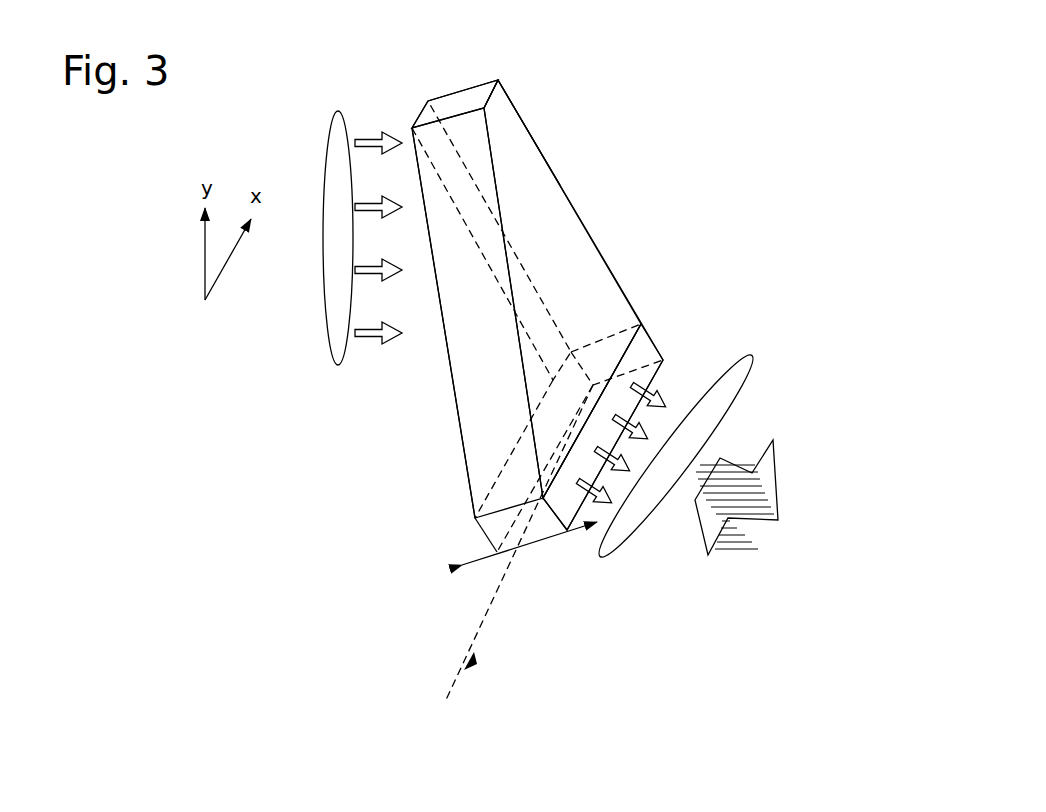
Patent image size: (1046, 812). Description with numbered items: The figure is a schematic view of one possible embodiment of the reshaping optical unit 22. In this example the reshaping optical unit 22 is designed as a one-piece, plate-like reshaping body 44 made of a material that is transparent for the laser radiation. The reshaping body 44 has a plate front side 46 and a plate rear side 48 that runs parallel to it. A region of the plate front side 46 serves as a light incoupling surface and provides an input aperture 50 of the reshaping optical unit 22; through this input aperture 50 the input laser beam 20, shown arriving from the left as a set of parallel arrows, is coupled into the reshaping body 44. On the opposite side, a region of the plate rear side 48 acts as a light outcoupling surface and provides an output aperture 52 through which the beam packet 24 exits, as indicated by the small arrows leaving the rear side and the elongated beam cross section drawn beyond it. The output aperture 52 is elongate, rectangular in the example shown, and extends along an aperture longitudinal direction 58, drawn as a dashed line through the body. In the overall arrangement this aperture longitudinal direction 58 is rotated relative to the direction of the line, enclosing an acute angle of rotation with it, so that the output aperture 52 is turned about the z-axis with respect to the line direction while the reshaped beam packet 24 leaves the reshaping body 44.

The input laser beam 20 is at (325, 113).
The reshaping optical unit 22 is at (552, 59).
The beam packet 24 is at (595, 570).
The reshaping body 44 is at (527, 123).
The plate front side 46 is at (487, 388).
The plate rear side 48 is at (553, 218).
The input aperture 50 is at (441, 155).
The output aperture 52 is at (643, 350).
The aperture longitudinal direction 58 is at (448, 702).